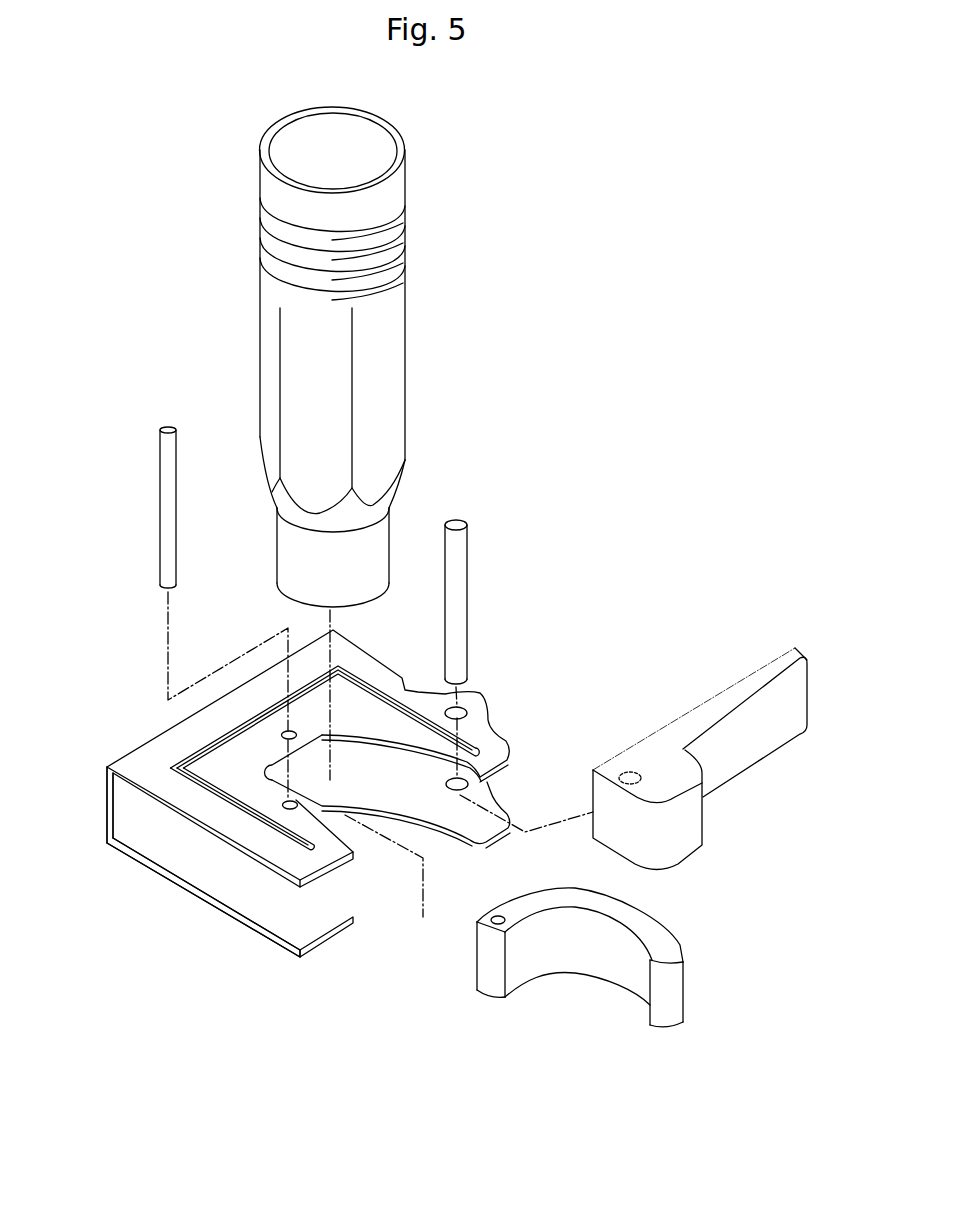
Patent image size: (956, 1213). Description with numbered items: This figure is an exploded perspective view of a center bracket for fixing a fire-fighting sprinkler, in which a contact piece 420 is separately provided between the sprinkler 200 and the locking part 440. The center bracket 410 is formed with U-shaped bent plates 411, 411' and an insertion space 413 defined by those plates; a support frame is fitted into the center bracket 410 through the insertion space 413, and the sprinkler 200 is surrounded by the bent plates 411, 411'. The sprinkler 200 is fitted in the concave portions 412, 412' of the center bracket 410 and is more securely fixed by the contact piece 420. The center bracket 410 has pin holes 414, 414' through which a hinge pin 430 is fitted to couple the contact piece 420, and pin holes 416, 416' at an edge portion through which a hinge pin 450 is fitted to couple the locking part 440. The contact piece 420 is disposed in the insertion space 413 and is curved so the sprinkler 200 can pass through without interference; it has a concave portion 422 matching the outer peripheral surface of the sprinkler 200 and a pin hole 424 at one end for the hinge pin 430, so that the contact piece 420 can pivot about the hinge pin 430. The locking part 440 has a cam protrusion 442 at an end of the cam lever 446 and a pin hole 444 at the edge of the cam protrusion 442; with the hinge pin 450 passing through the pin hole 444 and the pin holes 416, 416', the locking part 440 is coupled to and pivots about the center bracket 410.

The sprinkler 200 is at (413, 351).
The center bracket 410 is at (306, 817).
The bent plate 411 is at (203, 908).
The bent plate 411' is at (302, 960).
The concave portion 412 is at (373, 807).
The concave portion 412' is at (391, 846).
The insertion space 413 is at (125, 815).
The pin hole 414 is at (187, 704).
The pin hole 414' is at (174, 759).
The pin hole 416 is at (508, 685).
The pin hole 416' is at (514, 750).
The contact piece 420 is at (600, 983).
The concave portion 422 is at (603, 957).
The pin hole 424 is at (491, 919).
The hinge pin 430 is at (160, 554).
The locking part 440 is at (711, 741).
The cam protrusion 442 is at (678, 842).
The pin hole 444 is at (619, 776).
The cam lever 446 is at (753, 742).
The hinge pin 450 is at (467, 576).